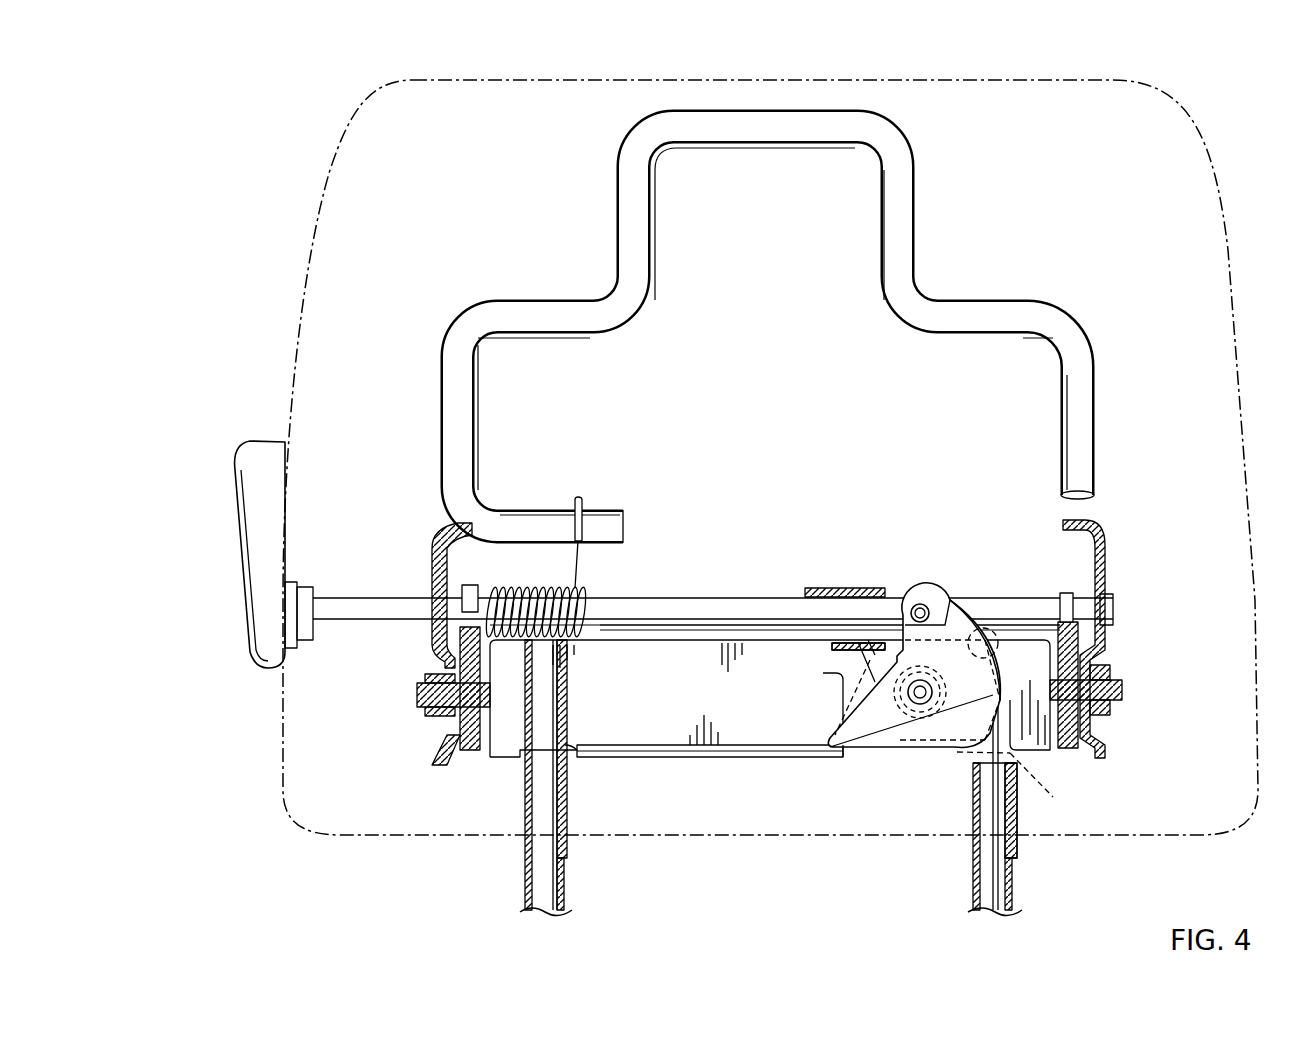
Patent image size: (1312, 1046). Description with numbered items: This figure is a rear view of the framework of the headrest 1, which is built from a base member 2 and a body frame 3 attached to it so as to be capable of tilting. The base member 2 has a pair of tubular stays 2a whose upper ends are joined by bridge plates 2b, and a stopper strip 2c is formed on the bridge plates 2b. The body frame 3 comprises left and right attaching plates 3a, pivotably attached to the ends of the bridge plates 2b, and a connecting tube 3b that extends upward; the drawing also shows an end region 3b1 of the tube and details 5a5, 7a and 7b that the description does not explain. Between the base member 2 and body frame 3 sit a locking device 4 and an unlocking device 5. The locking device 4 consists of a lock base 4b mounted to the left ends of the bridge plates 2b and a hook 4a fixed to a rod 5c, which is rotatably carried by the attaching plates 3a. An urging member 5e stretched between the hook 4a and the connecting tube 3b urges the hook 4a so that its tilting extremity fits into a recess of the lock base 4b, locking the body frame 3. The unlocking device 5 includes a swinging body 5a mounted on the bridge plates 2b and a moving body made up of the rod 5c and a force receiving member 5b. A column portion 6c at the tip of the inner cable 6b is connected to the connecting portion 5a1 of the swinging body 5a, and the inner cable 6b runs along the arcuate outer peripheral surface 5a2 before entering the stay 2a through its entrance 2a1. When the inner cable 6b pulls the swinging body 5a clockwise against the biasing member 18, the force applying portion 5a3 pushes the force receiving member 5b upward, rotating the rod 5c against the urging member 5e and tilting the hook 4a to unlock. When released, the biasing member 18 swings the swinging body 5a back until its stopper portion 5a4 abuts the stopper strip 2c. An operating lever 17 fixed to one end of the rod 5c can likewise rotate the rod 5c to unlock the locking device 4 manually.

The headrest 1 is at (320, 130).
The base member 2 is at (783, 786).
The stays 2a is at (528, 880).
The entrance of the stay 2a1 is at (1012, 800).
The bridge plates 2b is at (690, 757).
The stopper strip 2c is at (740, 757).
The body frame 3 is at (730, 326).
The attaching plates 3a is at (437, 540).
The connecting tube 3b is at (905, 178).
The frame pipe end portion 3b1 is at (535, 525).
The locking device 4 is at (465, 577).
The hook 4a is at (460, 590).
The lock base 4b is at (470, 748).
The unlocking device 5 is at (888, 583).
The swinging body 5a is at (933, 707).
The connecting portion 5a1 is at (943, 622).
The outer peripheral surface 5a2 is at (988, 632).
The force applying portion 5a3 is at (838, 655).
The stopper portion 5a4 is at (840, 757).
The lever pivot 5a5 is at (920, 706).
The force receiving member 5b is at (826, 662).
The rod 5c is at (642, 612).
The urging member 5e is at (588, 572).
The inner cable 6b is at (1000, 888).
The column portion 6c is at (921, 603).
The bushing 7a is at (1113, 608).
The bearing hub 7b is at (1070, 746).
The operating lever 17 is at (248, 484).
The biasing member 18 is at (1024, 784).